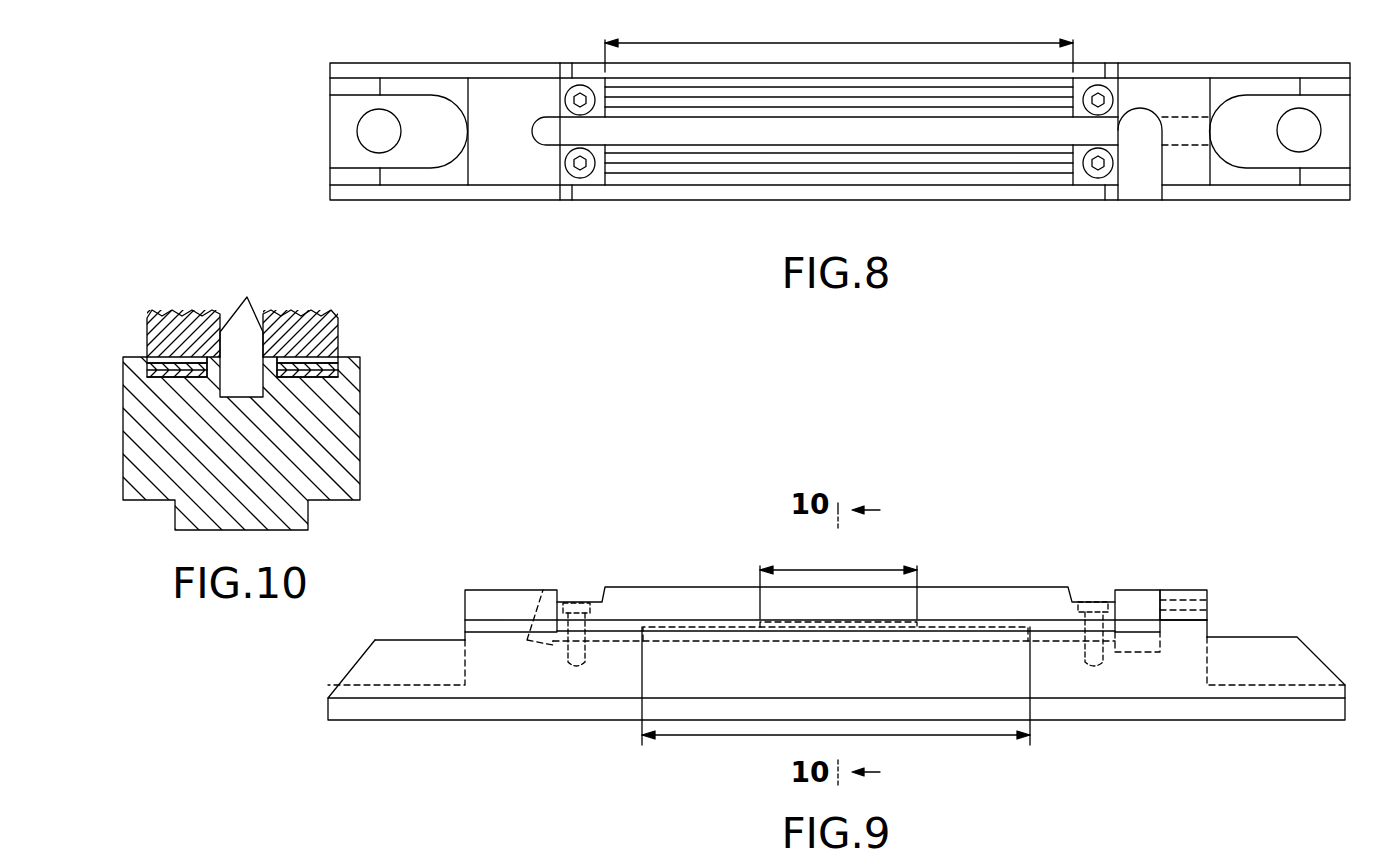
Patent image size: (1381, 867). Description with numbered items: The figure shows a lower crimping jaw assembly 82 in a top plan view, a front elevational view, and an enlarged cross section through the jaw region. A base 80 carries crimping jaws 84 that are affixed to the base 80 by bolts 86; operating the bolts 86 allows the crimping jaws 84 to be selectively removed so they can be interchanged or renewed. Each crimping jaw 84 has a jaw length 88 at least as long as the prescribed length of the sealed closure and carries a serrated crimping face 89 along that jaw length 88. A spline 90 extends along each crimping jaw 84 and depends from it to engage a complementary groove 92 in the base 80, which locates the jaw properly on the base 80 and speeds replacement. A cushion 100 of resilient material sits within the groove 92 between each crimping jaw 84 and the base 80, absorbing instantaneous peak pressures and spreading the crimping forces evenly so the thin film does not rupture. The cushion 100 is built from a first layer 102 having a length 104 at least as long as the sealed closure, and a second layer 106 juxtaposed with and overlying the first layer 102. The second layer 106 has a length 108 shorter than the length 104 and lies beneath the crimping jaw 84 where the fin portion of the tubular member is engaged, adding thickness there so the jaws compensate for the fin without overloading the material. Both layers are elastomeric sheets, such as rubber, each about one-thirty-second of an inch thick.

In FIG. 8, the base 80 is at (415, 176).
In FIG. 10, the base 80 is at (123, 495).
In FIG. 9, the base 80 is at (432, 710).
In FIG. 8, the crimping jaw assembly 82 is at (500, 58).
In FIG. 10, the crimping jaw assembly 82 is at (168, 519).
In FIG. 9, the crimping jaw assembly 82 is at (538, 727).
In FIG. 8, the crimping jaws 84 is at (727, 82).
In FIG. 10, the crimping jaws 84 is at (171, 310).
In FIG. 9, the crimping jaws 84 is at (1027, 598).
In FIG. 8, the bolts 86 is at (582, 92).
In FIG. 9, the bolts 86 is at (586, 604).
In FIG. 8, the jaw length 88 is at (845, 43).
In FIG. 8, the serrated crimping face 89 is at (903, 92).
In FIG. 9, the serrated crimping face 89 is at (669, 587).
In FIG. 10, the spline 90 is at (147, 359).
In FIG. 10, the groove 92 is at (170, 362).
In FIG. 10, the cushion 100 is at (138, 374).
In FIG. 10, the first layer 102 is at (152, 376).
In FIG. 9, the first layer 102 is at (926, 628).
In FIG. 9, the length 104 is at (863, 740).
In FIG. 10, the second layer 106 is at (244, 314).
In FIG. 9, the second layer 106 is at (880, 620).
In FIG. 9, the length 108 is at (836, 568).